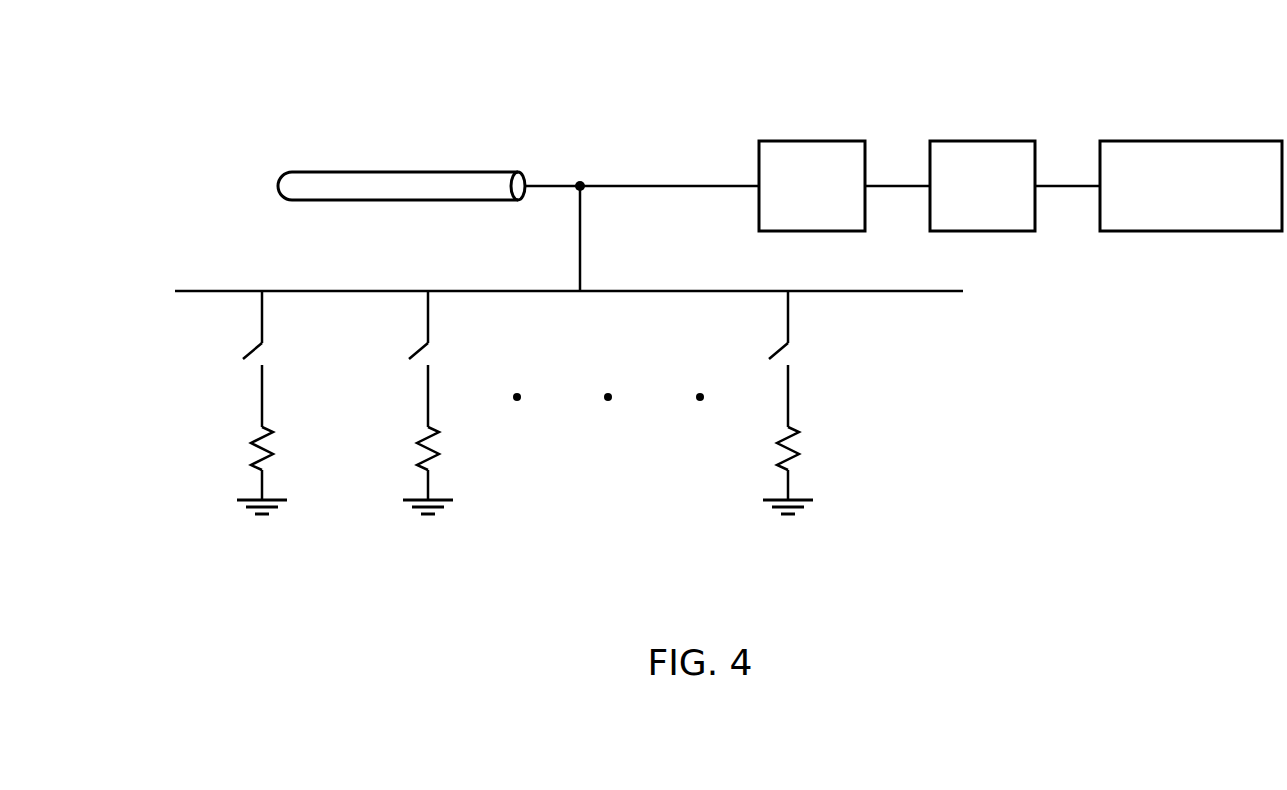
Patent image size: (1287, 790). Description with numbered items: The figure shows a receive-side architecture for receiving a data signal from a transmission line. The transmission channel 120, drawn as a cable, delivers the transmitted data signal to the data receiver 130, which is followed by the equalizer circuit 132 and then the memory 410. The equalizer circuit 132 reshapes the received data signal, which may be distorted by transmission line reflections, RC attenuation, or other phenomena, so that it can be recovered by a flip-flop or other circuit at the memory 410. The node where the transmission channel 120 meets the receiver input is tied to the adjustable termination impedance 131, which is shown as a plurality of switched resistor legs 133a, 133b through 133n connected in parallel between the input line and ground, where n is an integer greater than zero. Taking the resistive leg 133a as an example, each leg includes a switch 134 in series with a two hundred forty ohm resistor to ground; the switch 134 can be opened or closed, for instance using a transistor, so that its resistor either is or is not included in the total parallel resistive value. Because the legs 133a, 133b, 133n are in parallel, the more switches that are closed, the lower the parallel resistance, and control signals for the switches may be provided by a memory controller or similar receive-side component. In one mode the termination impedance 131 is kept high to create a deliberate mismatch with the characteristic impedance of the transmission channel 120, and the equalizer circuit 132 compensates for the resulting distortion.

The transmission channel 120 is at (400, 170).
The data receiver 130 is at (811, 140).
The equalizer circuit 132 is at (983, 140).
The memory 410 is at (1189, 140).
The termination impedance 131 is at (985, 277).
The switch 134 is at (236, 337).
The switched resistor leg 133a is at (247, 523).
The switched resistor leg 133b is at (412, 528).
The switched resistor leg 133n is at (771, 523).